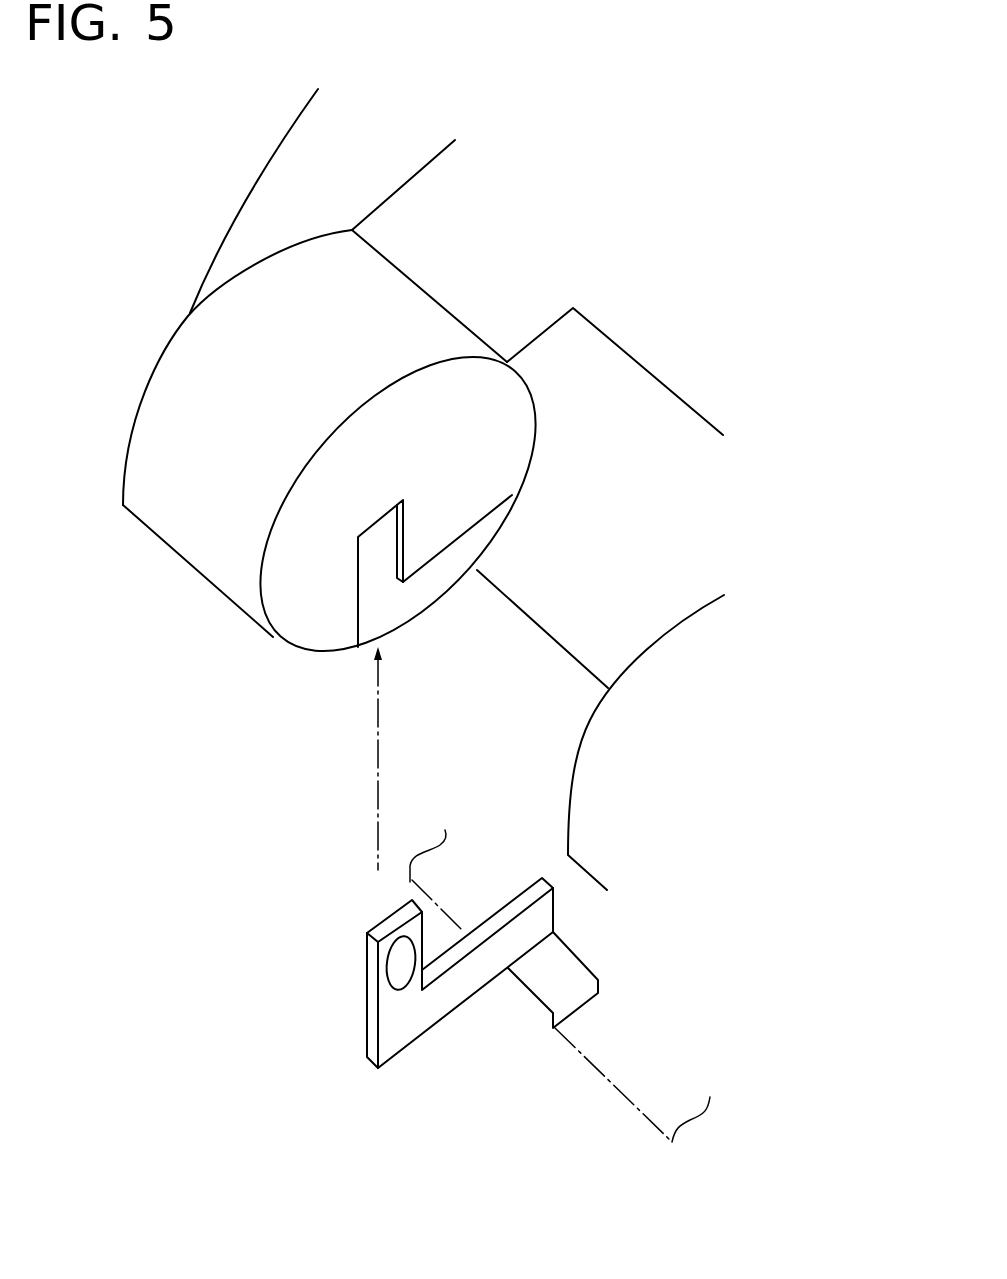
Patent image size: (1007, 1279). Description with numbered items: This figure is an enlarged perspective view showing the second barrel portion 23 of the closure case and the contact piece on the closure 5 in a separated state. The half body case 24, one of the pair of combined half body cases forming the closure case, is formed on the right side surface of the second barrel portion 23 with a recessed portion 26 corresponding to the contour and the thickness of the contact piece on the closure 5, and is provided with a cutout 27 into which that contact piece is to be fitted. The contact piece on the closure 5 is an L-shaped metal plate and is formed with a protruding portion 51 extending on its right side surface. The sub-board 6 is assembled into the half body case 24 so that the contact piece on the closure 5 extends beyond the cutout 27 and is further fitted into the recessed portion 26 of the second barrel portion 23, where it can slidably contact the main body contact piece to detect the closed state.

The half body case 24 is at (263, 175).
The second barrel portion 23 is at (200, 553).
The recessed portion 26 is at (382, 608).
The cutout 27 is at (473, 561).
The contact piece on the closure 5 is at (468, 990).
The protruding portion 51 is at (398, 977).
The sub-board 6 is at (617, 1100).